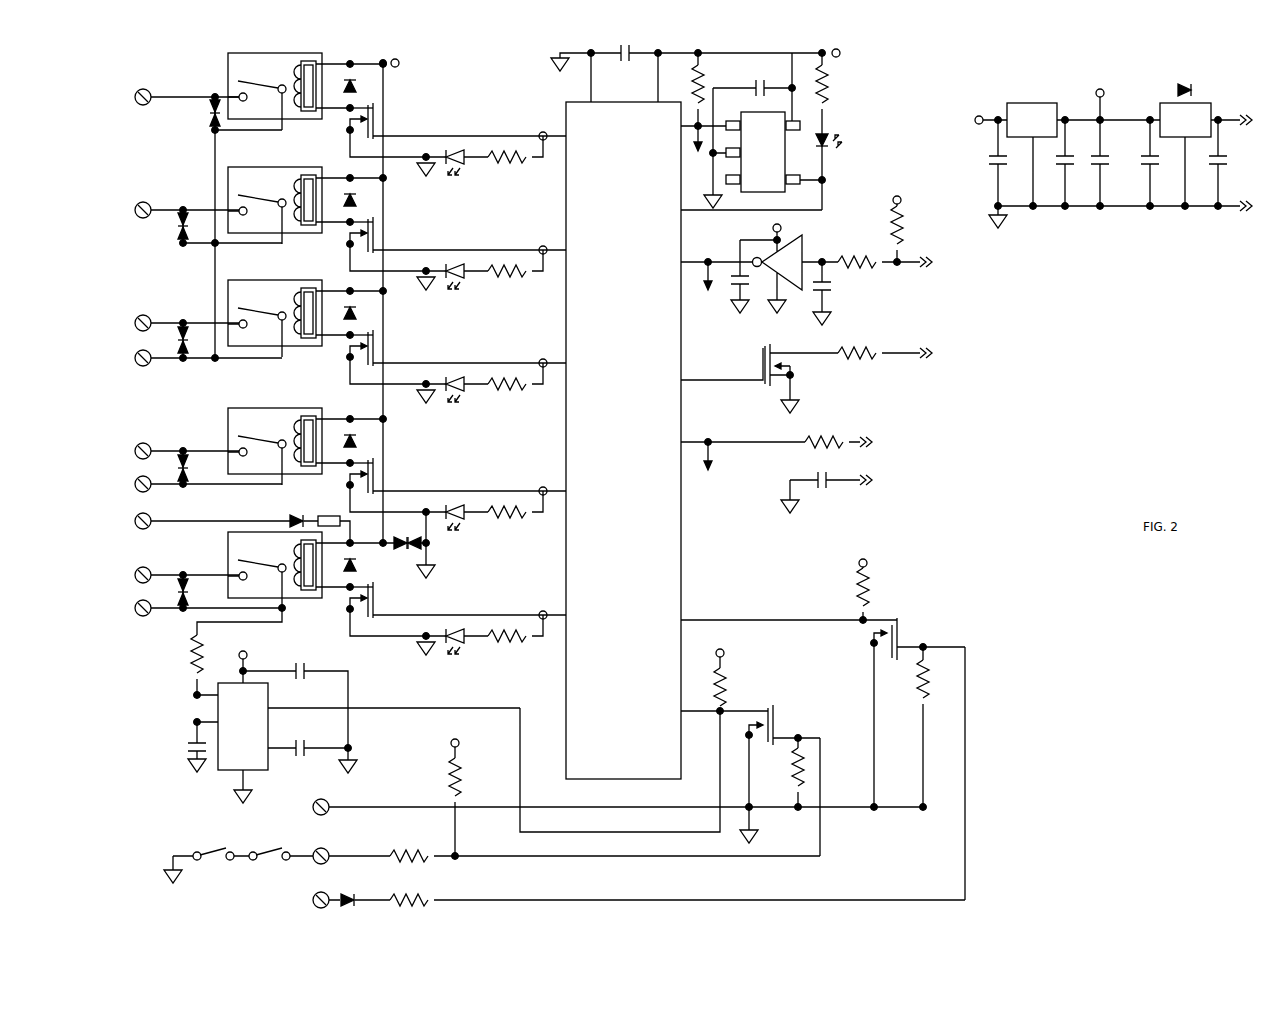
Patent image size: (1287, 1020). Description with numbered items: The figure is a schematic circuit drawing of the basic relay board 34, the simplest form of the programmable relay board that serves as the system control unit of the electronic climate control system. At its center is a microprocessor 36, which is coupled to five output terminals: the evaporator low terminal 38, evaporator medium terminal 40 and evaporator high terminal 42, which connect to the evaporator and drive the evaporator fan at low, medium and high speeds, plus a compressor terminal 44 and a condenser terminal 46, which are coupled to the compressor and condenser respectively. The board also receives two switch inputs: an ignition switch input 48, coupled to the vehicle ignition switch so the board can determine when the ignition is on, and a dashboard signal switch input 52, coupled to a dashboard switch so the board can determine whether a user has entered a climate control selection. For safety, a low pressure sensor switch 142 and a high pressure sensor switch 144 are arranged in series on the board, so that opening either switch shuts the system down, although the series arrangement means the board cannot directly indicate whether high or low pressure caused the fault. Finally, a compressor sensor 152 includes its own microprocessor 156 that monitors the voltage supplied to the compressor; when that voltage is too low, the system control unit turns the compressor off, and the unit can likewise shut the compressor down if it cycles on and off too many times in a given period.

The basic relay board 34 is at (1049, 450).
The microprocessor 36 is at (615, 526).
The evaporator low terminal 38 is at (228, 61).
The evaporator medium terminal 40 is at (228, 175).
The evaporator high terminal 42 is at (228, 288).
The compressor terminal 44 is at (228, 544).
The condenser terminal 46 is at (228, 416).
The ignition switch input 48 is at (140, 531).
The dashboard signal switch input 52 is at (310, 905).
The low pressure sensor switch 142 is at (214, 862).
The high pressure sensor switch 144 is at (272, 862).
The compressor sensor 152 is at (195, 697).
The microprocessor 156 is at (216, 768).